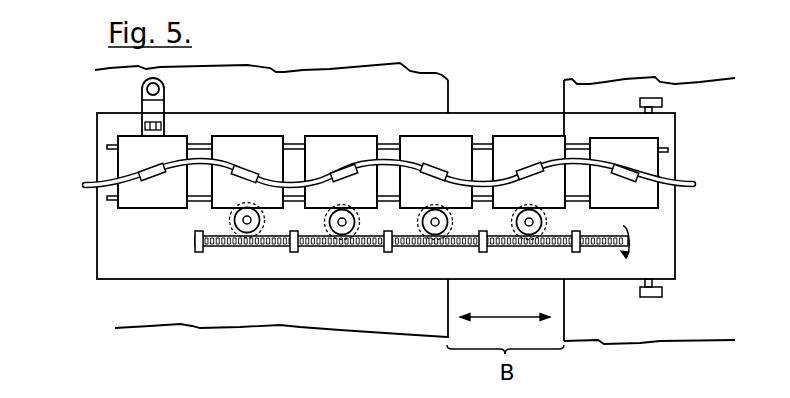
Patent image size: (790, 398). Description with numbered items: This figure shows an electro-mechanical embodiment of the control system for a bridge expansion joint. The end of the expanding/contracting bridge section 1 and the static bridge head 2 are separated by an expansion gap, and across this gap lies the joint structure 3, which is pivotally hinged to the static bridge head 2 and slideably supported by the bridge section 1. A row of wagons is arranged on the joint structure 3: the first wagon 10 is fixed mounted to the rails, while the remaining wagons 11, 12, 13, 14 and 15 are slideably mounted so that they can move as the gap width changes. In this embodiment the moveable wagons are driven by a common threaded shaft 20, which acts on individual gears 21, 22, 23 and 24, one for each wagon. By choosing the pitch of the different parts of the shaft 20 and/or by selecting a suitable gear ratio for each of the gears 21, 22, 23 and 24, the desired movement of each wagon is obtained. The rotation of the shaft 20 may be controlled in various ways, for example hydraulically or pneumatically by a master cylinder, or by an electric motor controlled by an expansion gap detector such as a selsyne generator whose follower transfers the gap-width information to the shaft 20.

The expanding/contracting bridge section 1 is at (188, 319).
The static bridge head 2 is at (613, 327).
The joint structure 3 is at (121, 271).
The first wagon 10 is at (624, 173).
The wagon 11 is at (529, 172).
The wagon 12 is at (436, 172).
The wagon 13 is at (341, 172).
The wagon 14 is at (248, 172).
The wagon 15 is at (152, 143).
The threaded shaft 20 is at (268, 247).
The gear 21 is at (537, 213).
The gear 22 is at (433, 211).
The gear 23 is at (347, 213).
The gear 24 is at (243, 212).